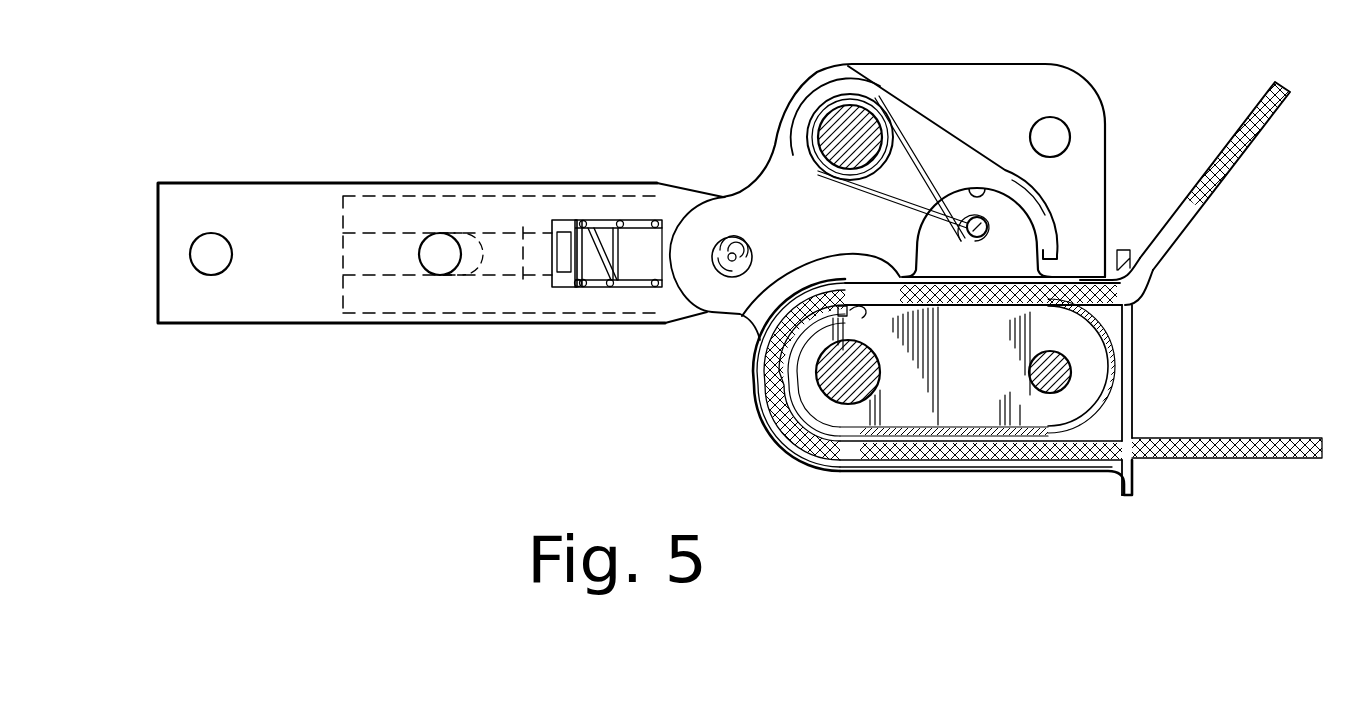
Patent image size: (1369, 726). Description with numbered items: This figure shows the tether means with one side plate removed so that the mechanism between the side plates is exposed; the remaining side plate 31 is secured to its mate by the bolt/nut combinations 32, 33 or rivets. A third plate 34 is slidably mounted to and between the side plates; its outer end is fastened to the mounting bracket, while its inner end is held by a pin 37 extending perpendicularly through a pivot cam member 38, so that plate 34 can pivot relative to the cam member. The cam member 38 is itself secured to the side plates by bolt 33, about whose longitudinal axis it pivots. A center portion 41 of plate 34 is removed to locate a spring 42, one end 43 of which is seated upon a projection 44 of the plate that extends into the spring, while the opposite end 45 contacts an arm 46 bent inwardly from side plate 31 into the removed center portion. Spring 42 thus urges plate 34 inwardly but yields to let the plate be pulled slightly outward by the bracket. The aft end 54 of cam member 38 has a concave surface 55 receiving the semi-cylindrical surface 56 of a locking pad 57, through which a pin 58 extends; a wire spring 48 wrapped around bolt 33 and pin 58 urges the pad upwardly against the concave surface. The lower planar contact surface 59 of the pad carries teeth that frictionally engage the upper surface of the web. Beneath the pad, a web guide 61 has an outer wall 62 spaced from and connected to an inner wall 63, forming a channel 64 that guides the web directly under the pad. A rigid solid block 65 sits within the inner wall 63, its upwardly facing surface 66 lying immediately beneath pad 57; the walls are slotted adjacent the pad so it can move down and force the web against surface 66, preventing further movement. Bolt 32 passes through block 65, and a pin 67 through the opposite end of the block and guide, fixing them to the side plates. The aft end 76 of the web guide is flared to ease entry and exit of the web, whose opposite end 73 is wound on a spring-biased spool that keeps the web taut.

The side plate 31 is at (1060, 88).
The bolt/nut combination 32 is at (828, 392).
The bolt/nut combination 33 is at (864, 106).
The third plate 34 is at (172, 212).
The pin 37 is at (752, 257).
The pivot cam member 38 is at (805, 103).
The center portion 41 is at (558, 218).
The spring 42 is at (592, 284).
The end of spring 43 is at (668, 290).
The projection 44 is at (633, 285).
The opposite end of spring 45 is at (575, 290).
The arm 46 is at (560, 250).
The wire spring 48 is at (936, 208).
The aft end of cam member 54 is at (1064, 226).
The concave surface 55 is at (983, 186).
The semi-cylindrical surface 56 is at (1045, 258).
The locking pad 57 is at (964, 267).
The pin 58 is at (1035, 200).
The lower planar contact surface 59 is at (1032, 306).
The web guide 61 is at (1137, 334).
The outer wall 62 is at (1060, 471).
The inner wall 63 is at (1105, 386).
The channel 64 is at (1128, 311).
The rigid solid block 65 is at (937, 392).
The upwardly facing surface 66 is at (866, 322).
The pin 67 is at (1030, 374).
The opposite end of web 73 is at (1250, 150).
The aft end of web guide 76 is at (1132, 496).